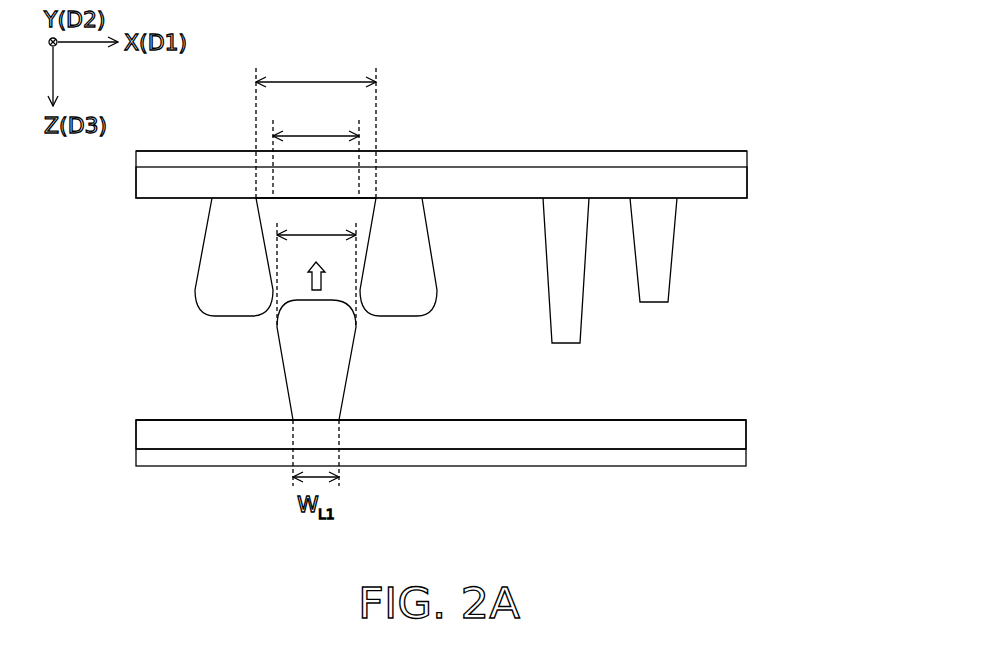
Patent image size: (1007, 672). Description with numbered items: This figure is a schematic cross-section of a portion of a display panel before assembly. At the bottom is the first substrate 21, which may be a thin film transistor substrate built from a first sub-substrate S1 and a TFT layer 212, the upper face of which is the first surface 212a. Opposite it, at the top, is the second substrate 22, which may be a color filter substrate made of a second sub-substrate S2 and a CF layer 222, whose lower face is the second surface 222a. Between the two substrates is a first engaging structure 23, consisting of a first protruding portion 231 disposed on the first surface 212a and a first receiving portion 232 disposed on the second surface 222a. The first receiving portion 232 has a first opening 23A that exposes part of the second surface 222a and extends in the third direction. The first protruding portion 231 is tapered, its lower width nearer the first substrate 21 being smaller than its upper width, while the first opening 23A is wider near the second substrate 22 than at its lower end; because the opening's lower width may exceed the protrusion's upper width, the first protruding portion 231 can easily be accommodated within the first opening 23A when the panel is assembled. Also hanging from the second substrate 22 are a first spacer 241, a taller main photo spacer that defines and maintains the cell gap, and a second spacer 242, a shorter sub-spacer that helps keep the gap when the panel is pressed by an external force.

The first substrate 21 is at (134, 420).
The TFT layer 212 is at (745, 430).
The first surface 212a is at (623, 422).
The first sub-substrate S1 is at (745, 458).
The second substrate 22 is at (134, 151).
The CF layer 222 is at (745, 186).
The second surface 222a is at (333, 197).
The second sub-substrate S2 is at (745, 157).
The first engaging structure 23 is at (99, 264).
The first protruding portion 231 is at (300, 363).
The first receiving portion 232 is at (382, 278).
The first opening 23A is at (293, 222).
The first spacer 241 is at (566, 345).
The second spacer 242 is at (655, 304).